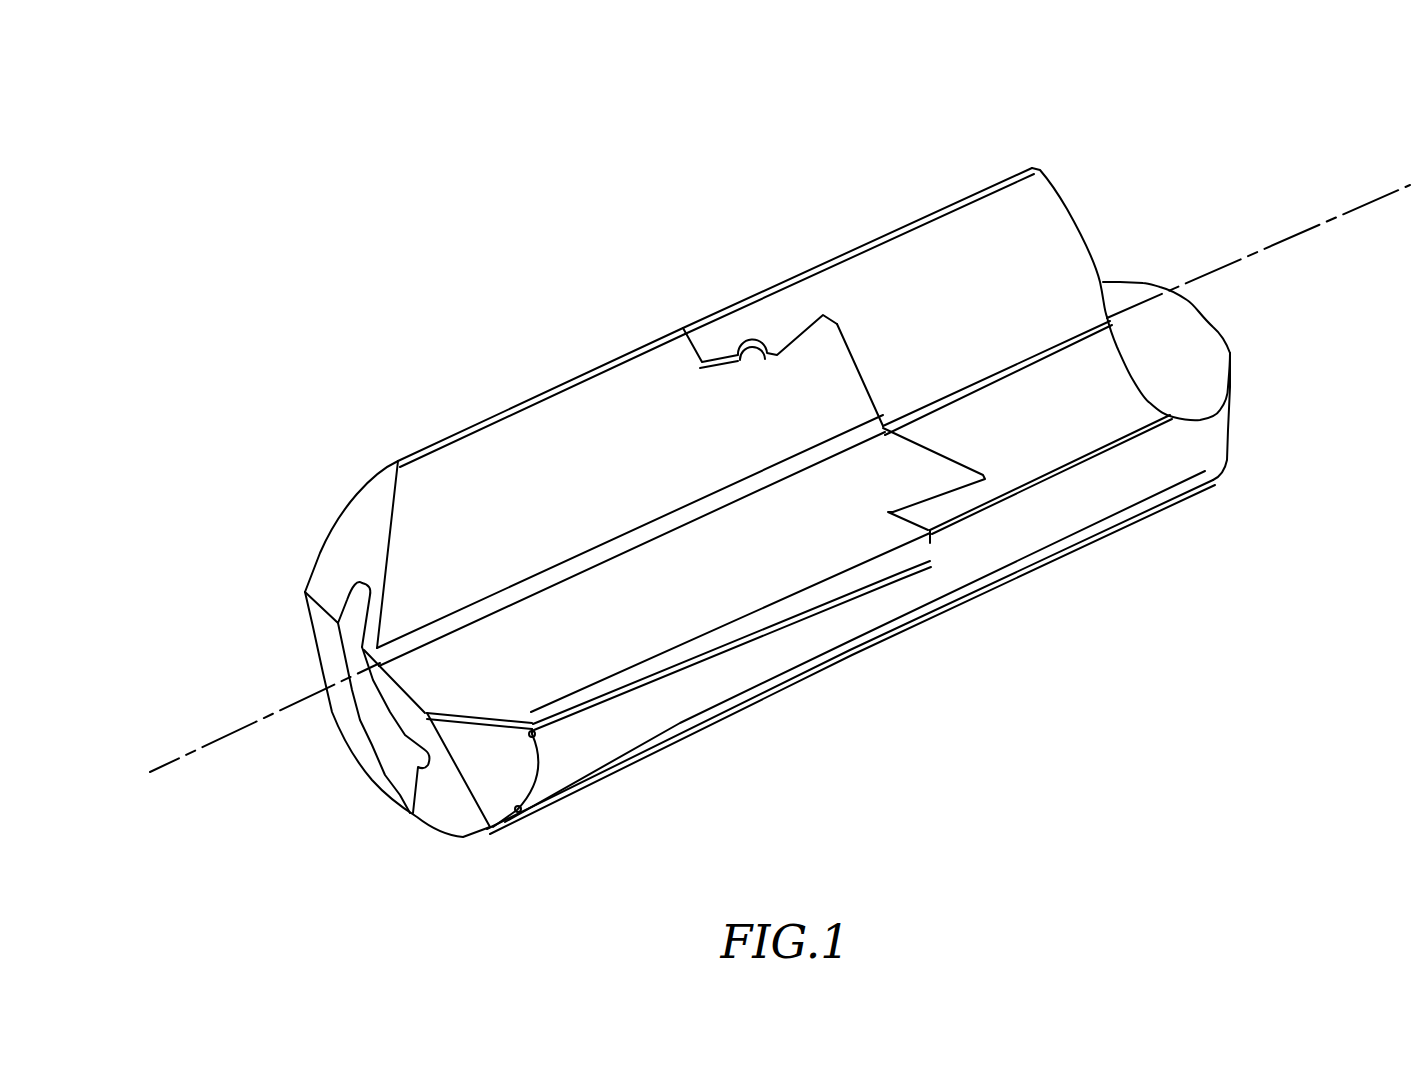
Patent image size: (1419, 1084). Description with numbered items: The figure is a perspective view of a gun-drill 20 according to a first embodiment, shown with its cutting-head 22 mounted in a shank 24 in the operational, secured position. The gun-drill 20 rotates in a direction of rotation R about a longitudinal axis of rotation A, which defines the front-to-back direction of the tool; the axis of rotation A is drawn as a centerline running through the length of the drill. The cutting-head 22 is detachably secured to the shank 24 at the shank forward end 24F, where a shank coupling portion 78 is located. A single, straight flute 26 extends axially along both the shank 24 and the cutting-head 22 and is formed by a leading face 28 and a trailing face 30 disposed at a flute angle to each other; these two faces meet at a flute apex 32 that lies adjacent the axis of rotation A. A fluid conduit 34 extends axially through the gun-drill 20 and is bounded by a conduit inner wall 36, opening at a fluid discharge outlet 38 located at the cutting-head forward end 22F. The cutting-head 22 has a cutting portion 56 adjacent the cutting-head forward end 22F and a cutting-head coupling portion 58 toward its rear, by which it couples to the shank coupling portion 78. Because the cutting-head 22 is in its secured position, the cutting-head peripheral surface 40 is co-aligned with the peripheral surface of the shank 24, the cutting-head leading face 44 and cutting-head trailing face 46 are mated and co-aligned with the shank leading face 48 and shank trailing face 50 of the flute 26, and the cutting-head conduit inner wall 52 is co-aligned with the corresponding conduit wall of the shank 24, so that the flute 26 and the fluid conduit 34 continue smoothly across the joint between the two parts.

The gun-drill 20 is at (397, 139).
The cutting-head 22 is at (510, 364).
The cutting-head forward end 22F is at (467, 832).
The shank 24 is at (890, 195).
The shank forward end 24F is at (723, 316).
The flute 26 is at (606, 385).
The flute leading face 28 is at (568, 660).
The flute trailing face 30 is at (442, 485).
The flute apex 32 is at (447, 622).
The fluid conduit 34 is at (363, 747).
The conduit inner wall 36 is at (345, 591).
The fluid discharge outlet 38 is at (363, 699).
The cutting-head peripheral surface 40 is at (767, 677).
The cutting-head leading face 44 is at (869, 496).
The cutting-head trailing face 46 is at (568, 417).
The shank leading face 48 is at (1110, 393).
The shank trailing face 50 is at (1053, 248).
The cutting-head conduit inner wall 52 is at (391, 757).
The cutting portion 56 is at (567, 800).
The cutting-head coupling portion 58 is at (930, 533).
The shank coupling portion 78 is at (776, 347).
The axis of rotation A is at (170, 757).
The direction of rotation R is at (190, 675).